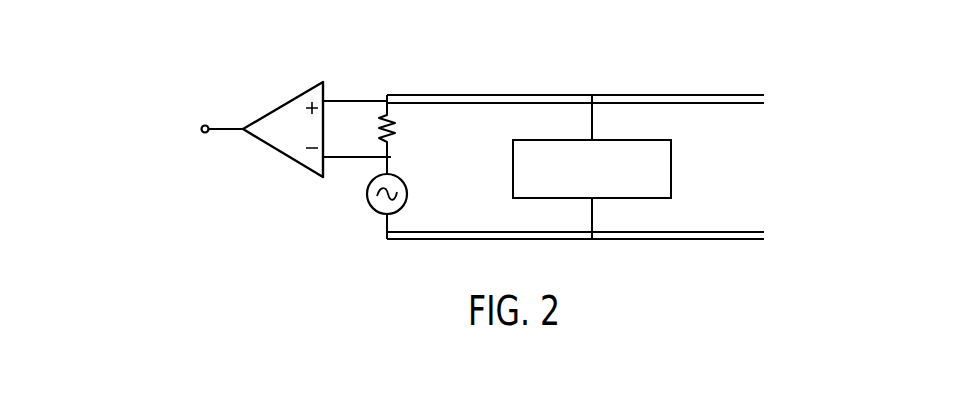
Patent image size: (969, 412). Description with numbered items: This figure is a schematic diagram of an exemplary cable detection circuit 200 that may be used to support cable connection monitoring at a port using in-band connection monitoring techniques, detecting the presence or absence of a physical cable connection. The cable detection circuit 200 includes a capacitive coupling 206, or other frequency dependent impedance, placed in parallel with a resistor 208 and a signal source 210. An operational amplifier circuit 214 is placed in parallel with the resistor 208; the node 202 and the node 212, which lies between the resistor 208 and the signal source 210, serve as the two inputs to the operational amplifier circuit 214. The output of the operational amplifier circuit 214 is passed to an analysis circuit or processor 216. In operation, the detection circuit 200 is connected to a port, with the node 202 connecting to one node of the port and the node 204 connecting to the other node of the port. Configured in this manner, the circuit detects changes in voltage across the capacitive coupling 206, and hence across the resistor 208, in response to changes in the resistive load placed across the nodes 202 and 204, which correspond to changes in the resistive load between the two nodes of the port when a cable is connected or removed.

The cable detection circuit 200 is at (647, 38).
The node 202 is at (773, 85).
The node 204 is at (773, 218).
The capacitive coupling 206 is at (671, 152).
The resistor 208 is at (391, 117).
The signal source 210 is at (403, 208).
The node 212 is at (389, 165).
The operational amplifier circuit 214 is at (303, 91).
The analysis circuit or processor 216 is at (160, 138).